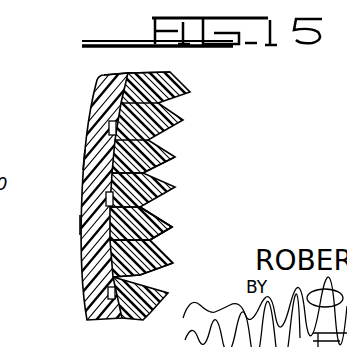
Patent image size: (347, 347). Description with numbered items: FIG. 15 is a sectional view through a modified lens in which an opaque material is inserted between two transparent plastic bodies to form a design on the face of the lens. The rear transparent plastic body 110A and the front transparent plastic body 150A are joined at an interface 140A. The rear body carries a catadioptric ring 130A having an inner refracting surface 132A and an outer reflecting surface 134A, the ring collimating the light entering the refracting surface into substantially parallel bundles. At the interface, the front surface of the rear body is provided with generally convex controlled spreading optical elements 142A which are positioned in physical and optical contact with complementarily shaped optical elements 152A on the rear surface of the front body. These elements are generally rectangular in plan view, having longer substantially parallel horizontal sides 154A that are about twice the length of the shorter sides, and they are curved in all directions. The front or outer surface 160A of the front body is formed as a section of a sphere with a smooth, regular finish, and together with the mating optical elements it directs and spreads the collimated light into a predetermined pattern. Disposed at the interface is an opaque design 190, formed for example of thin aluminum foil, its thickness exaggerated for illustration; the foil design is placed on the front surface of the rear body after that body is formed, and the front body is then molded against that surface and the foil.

The rear transparent plastic body 110A is at (172, 106).
The catadioptric ring 130A is at (171, 230).
The inner refracting surface 132A is at (172, 240).
The outer reflecting surface 134A is at (170, 224).
The interface 140A is at (128, 78).
The controlled spreading optical elements 142A is at (86, 157).
The front transparent plastic body 150A is at (93, 94).
The complementarily shaped optical elements 152A is at (173, 277).
The longer horizontal sides 154A is at (165, 172).
The front or outer surface 160A is at (81, 228).
The opaque design 190 is at (109, 126).